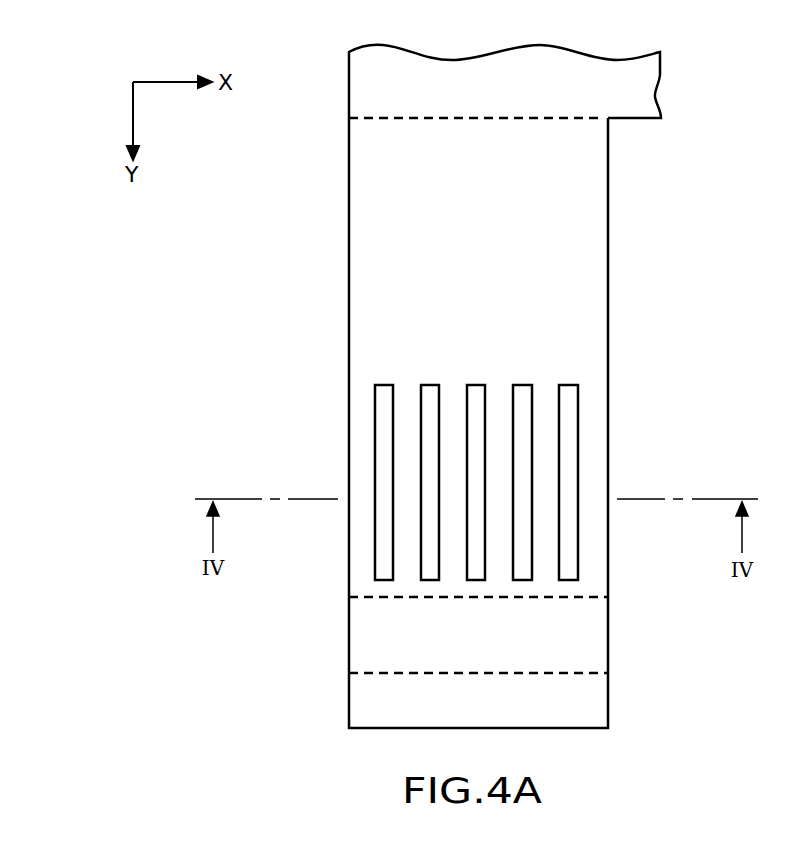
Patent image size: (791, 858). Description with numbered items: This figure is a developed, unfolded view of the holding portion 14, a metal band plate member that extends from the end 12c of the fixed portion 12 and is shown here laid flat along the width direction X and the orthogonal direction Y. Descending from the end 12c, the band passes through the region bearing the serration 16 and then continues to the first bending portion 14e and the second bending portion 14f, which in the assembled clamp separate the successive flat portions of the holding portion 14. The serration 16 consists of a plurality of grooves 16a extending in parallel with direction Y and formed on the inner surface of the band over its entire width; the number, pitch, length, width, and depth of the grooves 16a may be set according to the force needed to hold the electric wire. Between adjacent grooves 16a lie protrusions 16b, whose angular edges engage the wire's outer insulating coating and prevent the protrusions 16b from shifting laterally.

The fixed portion 12 is at (349, 83).
The end of fixed portion 12c is at (393, 118).
The holding portion 14 is at (608, 262).
The first bending portion 14e is at (383, 598).
The second bending portion 14f is at (380, 674).
The serration 16 is at (575, 348).
The grooves 16a is at (477, 493).
The protrusions 16b is at (365, 395).